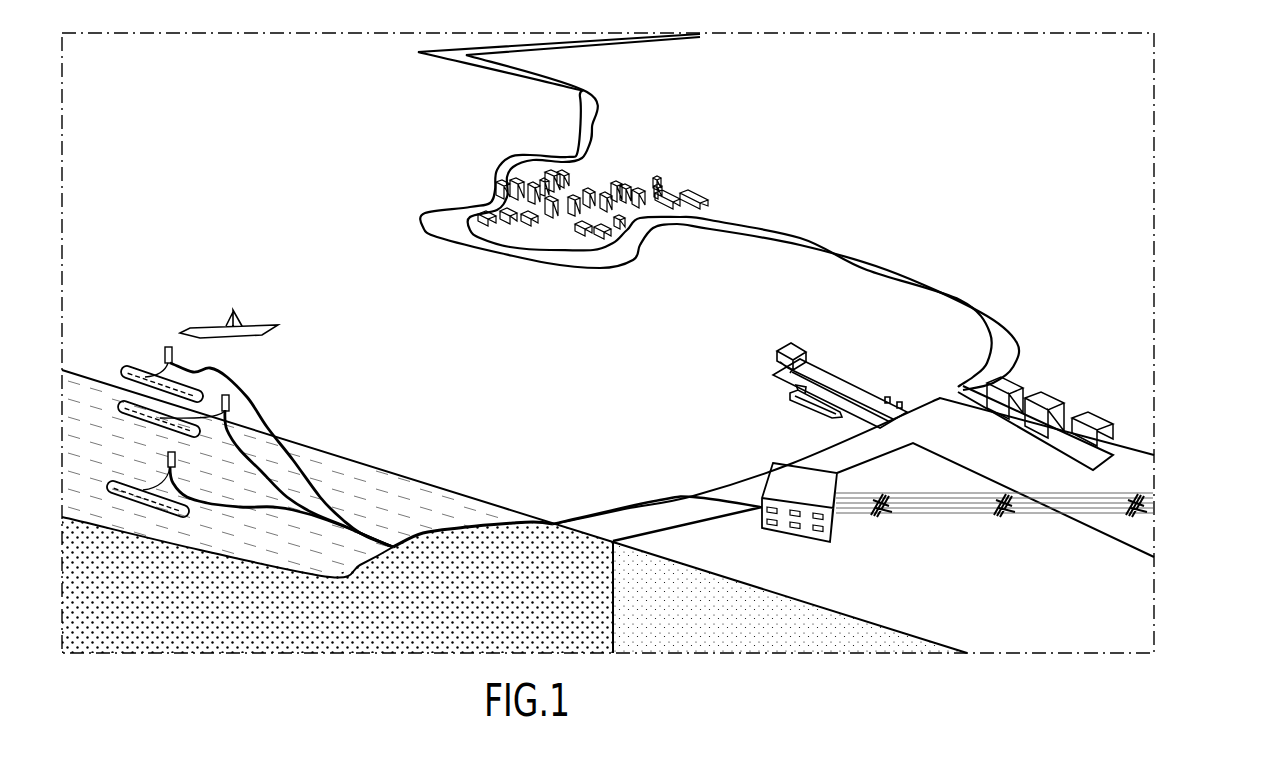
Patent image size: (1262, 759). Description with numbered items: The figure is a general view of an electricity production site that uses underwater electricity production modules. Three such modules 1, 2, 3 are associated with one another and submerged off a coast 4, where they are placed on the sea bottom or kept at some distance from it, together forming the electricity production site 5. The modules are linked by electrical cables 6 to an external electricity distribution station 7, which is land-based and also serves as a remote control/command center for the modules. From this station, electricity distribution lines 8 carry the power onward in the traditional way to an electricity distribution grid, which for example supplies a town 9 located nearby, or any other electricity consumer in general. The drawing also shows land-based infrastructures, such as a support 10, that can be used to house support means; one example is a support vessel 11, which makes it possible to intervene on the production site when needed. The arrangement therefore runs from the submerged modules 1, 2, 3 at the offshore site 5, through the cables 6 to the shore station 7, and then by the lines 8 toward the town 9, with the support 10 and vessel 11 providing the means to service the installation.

The underwater electricity production module 1 is at (149, 510).
The underwater electricity production module 2 is at (162, 428).
The underwater electricity production module 3 is at (136, 359).
The coast 4 is at (622, 503).
The electricity production site 5 is at (270, 378).
The electrical cables 6 is at (337, 487).
The external electricity distribution station 7 is at (772, 453).
The electricity distribution lines 8 is at (1142, 523).
The town 9 is at (507, 148).
The land-based infrastructure support 10 is at (862, 370).
The support vessel 11 is at (780, 340).